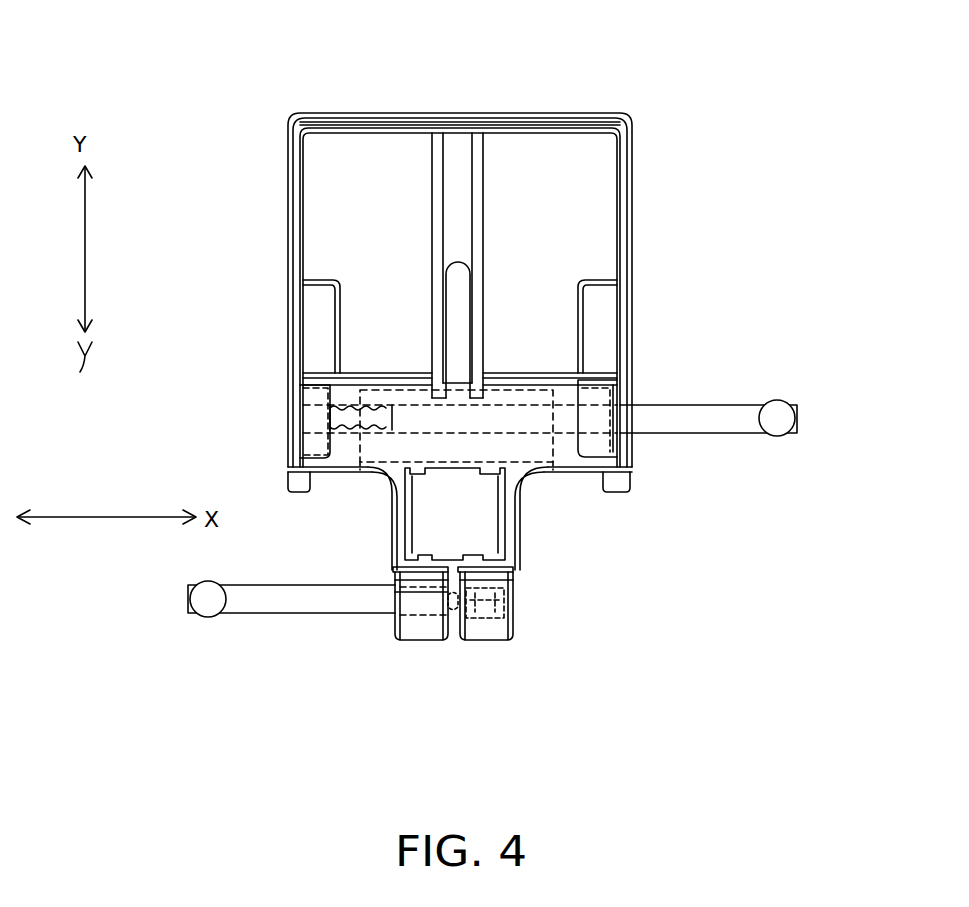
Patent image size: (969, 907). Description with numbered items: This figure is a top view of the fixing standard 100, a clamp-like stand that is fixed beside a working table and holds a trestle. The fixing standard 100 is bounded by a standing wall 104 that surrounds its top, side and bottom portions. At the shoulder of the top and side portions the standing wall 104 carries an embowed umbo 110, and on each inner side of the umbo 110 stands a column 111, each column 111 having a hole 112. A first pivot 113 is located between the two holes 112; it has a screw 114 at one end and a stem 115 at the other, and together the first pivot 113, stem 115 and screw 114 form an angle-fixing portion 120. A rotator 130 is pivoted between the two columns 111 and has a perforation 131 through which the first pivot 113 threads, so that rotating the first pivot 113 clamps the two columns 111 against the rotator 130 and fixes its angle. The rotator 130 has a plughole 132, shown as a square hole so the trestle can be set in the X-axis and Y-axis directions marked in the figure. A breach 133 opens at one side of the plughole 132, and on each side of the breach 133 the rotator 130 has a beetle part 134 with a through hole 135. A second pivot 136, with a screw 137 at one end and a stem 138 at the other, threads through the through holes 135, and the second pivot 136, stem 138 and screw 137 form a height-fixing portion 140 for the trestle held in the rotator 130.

The fixing standard 100 is at (421, 98).
The standing wall 104 is at (630, 178).
The embowed umbo 110 is at (288, 370).
The column 111 is at (313, 302).
The hole 112 is at (593, 432).
The first pivot 113 is at (685, 410).
The screw 114 is at (316, 413).
The stem 115 is at (777, 405).
The angle-fixing portion 120 is at (851, 343).
The rotator 130 is at (385, 478).
The perforation 131 is at (530, 433).
The plughole 132 is at (472, 528).
The breach 133 is at (447, 635).
The beetle part 134 is at (492, 630).
The through hole 135 is at (420, 615).
The second pivot 136 is at (272, 602).
The screw 137 is at (475, 615).
The stem 138 is at (208, 620).
The height-fixing portion 140 is at (518, 722).